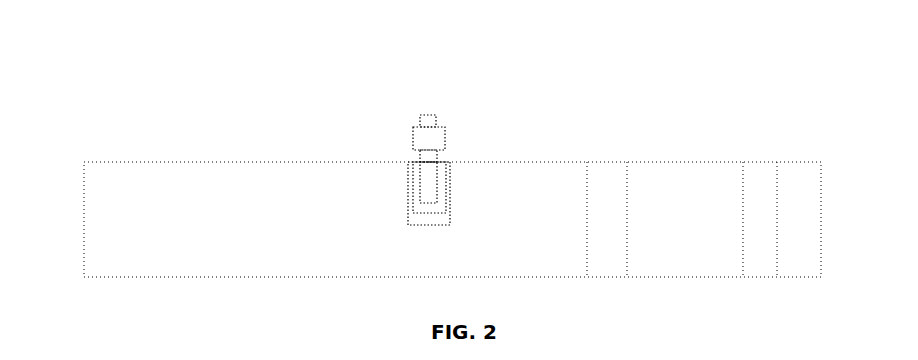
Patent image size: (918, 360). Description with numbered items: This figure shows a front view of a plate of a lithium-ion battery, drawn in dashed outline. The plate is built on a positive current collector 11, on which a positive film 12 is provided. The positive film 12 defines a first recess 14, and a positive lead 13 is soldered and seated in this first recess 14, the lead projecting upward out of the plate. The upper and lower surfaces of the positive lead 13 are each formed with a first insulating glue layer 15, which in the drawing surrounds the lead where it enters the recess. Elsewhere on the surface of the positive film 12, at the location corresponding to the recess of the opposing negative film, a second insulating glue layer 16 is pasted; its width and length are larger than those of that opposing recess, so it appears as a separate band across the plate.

The positive current collector 11 is at (810, 243).
The positive film 12 is at (108, 232).
The positive lead 13 is at (434, 115).
The first recess 14 is at (445, 165).
The first insulating glue layer 15 is at (450, 220).
The second insulating glue layer 16 is at (601, 188).